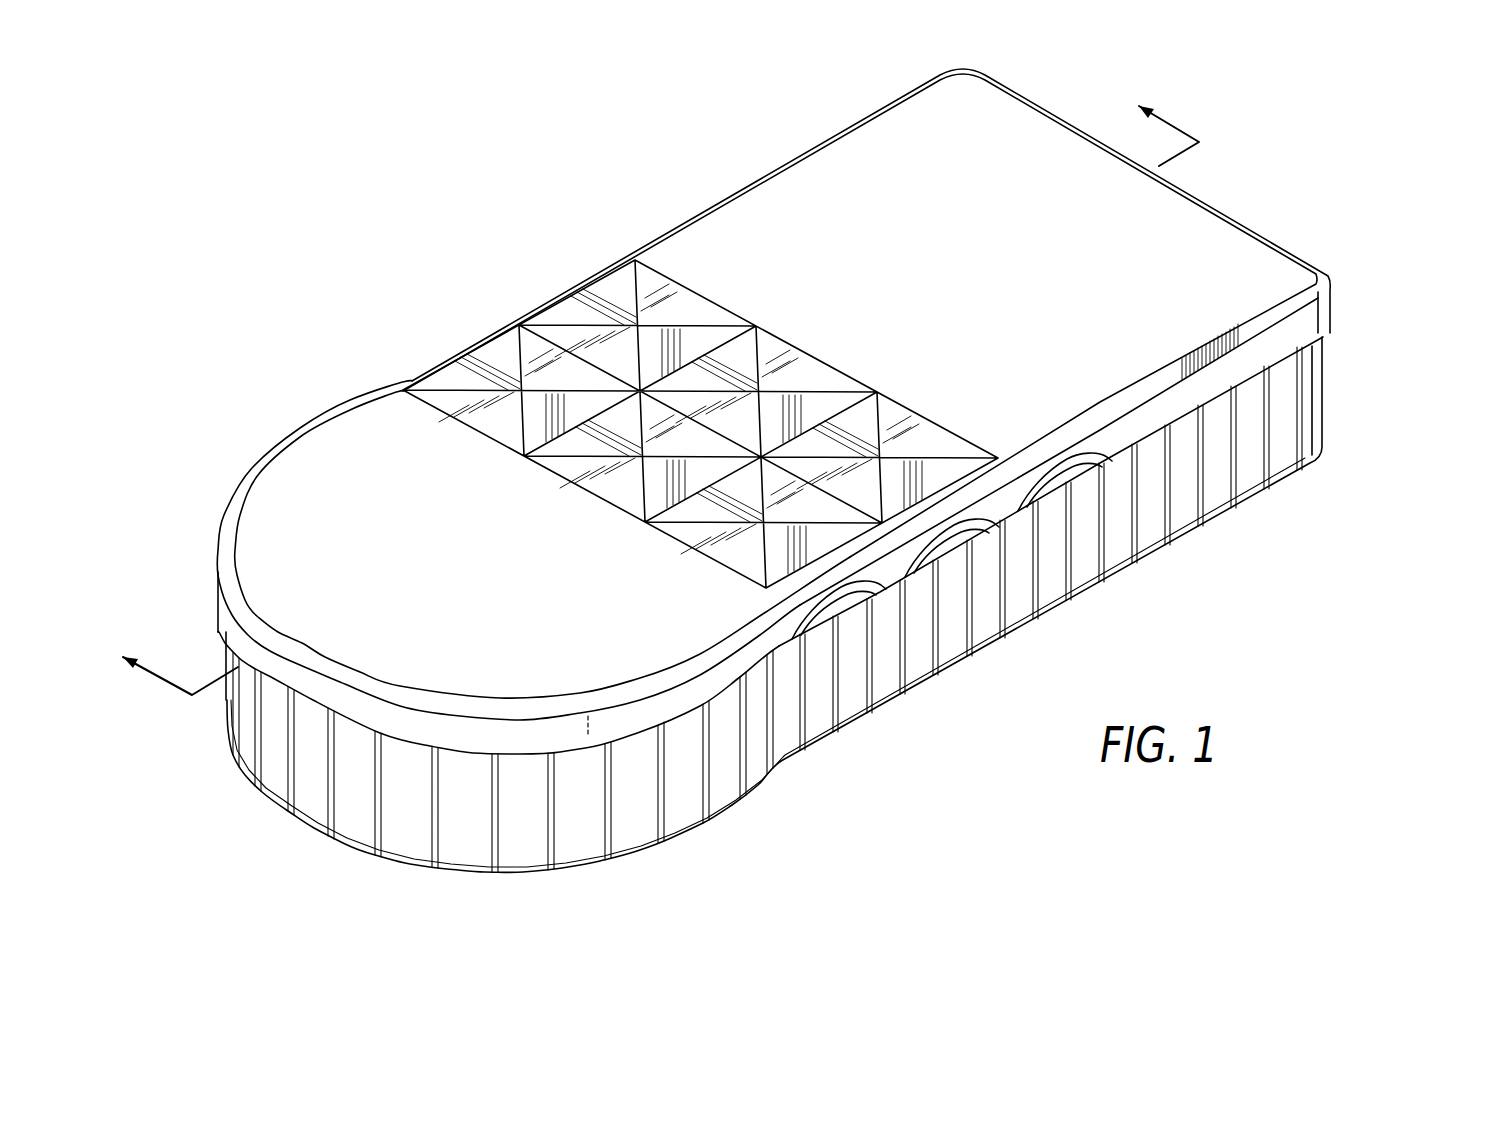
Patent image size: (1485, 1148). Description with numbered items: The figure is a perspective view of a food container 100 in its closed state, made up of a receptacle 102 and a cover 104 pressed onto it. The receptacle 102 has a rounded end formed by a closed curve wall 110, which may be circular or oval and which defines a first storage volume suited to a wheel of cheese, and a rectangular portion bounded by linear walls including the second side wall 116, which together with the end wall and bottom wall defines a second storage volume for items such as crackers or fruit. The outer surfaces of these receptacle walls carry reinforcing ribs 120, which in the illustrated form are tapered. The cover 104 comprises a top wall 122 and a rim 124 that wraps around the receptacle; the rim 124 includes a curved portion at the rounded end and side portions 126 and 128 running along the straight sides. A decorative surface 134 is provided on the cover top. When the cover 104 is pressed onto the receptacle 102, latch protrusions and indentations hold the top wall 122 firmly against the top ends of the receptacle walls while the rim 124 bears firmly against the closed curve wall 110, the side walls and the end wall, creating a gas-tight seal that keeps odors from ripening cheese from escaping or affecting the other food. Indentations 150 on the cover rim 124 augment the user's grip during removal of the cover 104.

The food container 100 is at (440, 236).
The receptacle 102 is at (583, 874).
The cover 104 is at (1205, 188).
The closed curve wall 110 is at (680, 797).
The second side wall 116 is at (850, 690).
The reinforcing ribs 120 is at (380, 788).
The top wall 122 is at (1196, 282).
The rim 124 is at (1158, 416).
The side portion 126 is at (313, 693).
The side portion 128 is at (1268, 348).
The decorative surface 134 is at (803, 375).
The indentations 150 is at (1061, 478).